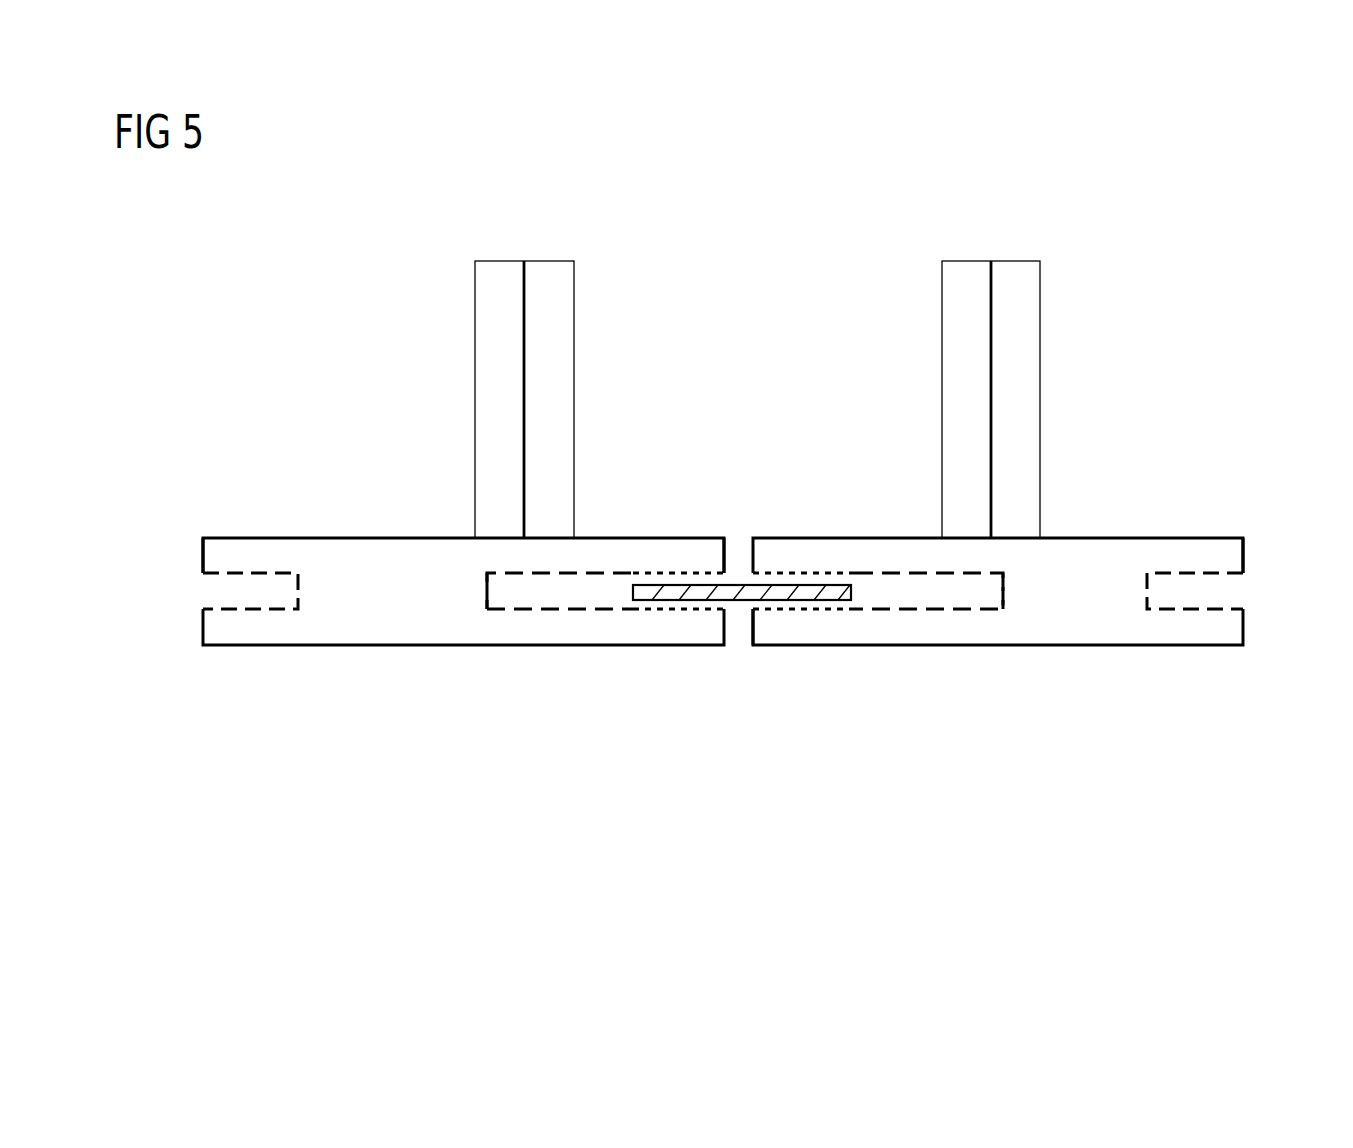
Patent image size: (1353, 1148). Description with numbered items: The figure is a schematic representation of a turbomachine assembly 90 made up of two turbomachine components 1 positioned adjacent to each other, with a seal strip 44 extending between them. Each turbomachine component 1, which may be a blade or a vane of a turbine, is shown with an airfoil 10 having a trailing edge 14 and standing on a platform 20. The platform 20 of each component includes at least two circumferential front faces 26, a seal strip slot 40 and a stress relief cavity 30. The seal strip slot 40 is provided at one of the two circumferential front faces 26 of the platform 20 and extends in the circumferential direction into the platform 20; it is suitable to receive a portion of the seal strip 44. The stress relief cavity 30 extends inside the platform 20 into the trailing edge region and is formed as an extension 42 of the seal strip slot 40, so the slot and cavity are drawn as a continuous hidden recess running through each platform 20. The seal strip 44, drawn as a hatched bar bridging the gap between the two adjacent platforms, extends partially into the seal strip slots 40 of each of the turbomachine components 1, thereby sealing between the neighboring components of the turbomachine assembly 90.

The turbomachine component 1 is at (392, 272).
The airfoil 10 is at (574, 282).
The trailing edge 14 is at (524, 374).
The platform 20 is at (323, 538).
The circumferential front face 26 is at (203, 553).
The stress relief cavity 30 is at (545, 595).
The seal strip slot 40 is at (214, 596).
The extension 42 is at (487, 612).
The seal strip 44 is at (742, 585).
The turbomachine assembly 90 is at (660, 804).